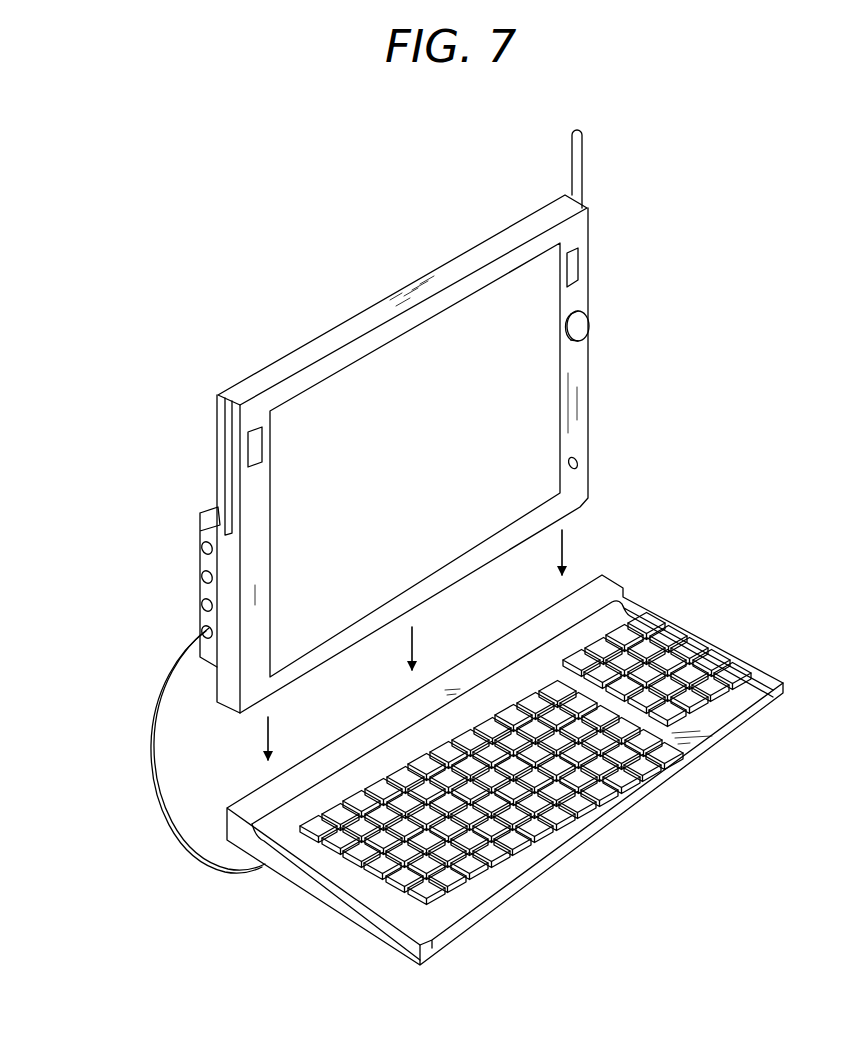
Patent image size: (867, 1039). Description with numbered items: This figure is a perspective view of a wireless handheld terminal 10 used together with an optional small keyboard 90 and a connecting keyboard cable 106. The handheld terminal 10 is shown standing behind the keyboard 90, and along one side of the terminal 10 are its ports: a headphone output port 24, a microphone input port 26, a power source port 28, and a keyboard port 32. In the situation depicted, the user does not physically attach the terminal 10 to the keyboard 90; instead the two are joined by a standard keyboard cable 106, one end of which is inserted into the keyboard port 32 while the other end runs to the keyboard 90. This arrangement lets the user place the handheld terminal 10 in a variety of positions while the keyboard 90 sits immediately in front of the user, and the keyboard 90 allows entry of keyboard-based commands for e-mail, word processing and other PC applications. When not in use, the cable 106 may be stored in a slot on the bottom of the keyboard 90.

The handheld terminal 10 is at (587, 435).
The headphone output port 24 is at (200, 530).
The microphone input port 26 is at (200, 562).
The power source port 28 is at (200, 592).
The keyboard port 32 is at (200, 622).
The keyboard 90 is at (590, 800).
The keyboard cable 106 is at (150, 782).